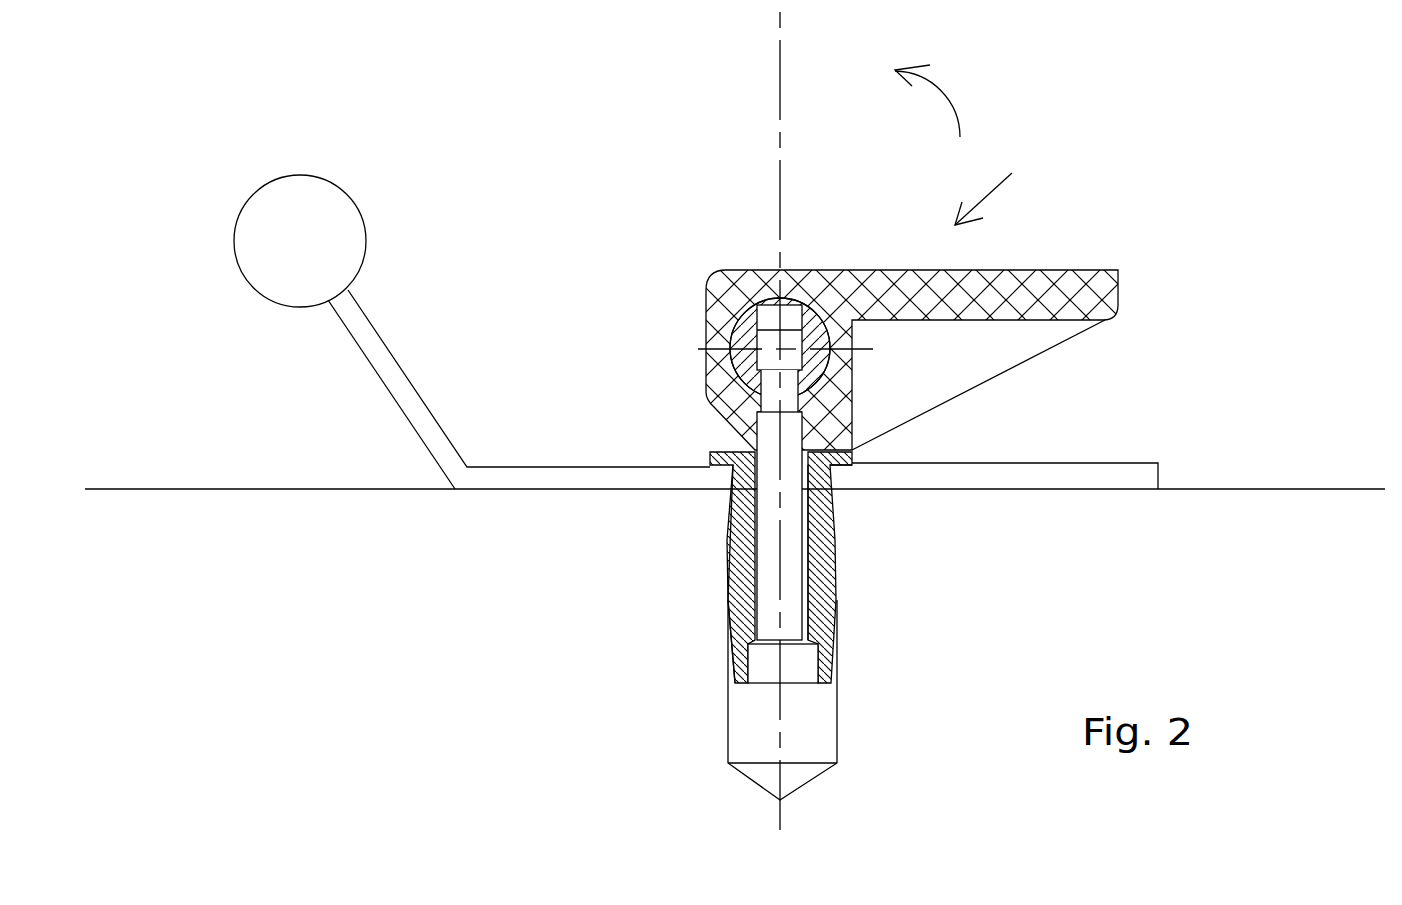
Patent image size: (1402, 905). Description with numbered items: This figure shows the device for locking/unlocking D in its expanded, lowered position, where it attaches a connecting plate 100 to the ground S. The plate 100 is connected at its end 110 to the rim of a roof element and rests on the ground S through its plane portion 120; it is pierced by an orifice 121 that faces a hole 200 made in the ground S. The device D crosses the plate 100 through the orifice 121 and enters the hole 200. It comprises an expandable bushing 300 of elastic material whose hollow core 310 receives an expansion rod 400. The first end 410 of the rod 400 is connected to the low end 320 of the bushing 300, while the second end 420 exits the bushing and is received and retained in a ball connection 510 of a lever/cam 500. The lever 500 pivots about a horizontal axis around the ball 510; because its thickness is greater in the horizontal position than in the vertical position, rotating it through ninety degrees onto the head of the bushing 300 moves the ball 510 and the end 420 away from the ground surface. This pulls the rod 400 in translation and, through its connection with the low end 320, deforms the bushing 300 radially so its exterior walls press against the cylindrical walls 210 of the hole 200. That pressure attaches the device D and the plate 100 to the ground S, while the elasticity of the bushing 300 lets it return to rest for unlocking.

The connecting plate 100 is at (519, 389).
The end of the plate 110 is at (331, 210).
The plane portion 120 is at (1027, 445).
The orifice 121 is at (871, 514).
The hole 200 is at (773, 708).
The cylindrical walls of the hole 210 is at (860, 552).
The expandable bushing 300 is at (812, 567).
The hollow core 310 is at (701, 544).
The low end of the bushing 320 is at (694, 643).
The expansion rod 400 is at (724, 526).
The first end of the rod 410 is at (831, 681).
The second end of the rod 420 is at (722, 360).
The lever/cam 500 is at (884, 352).
The ball connection 510 is at (743, 328).
The ground S is at (427, 490).
The device for locking/unlocking D is at (977, 145).